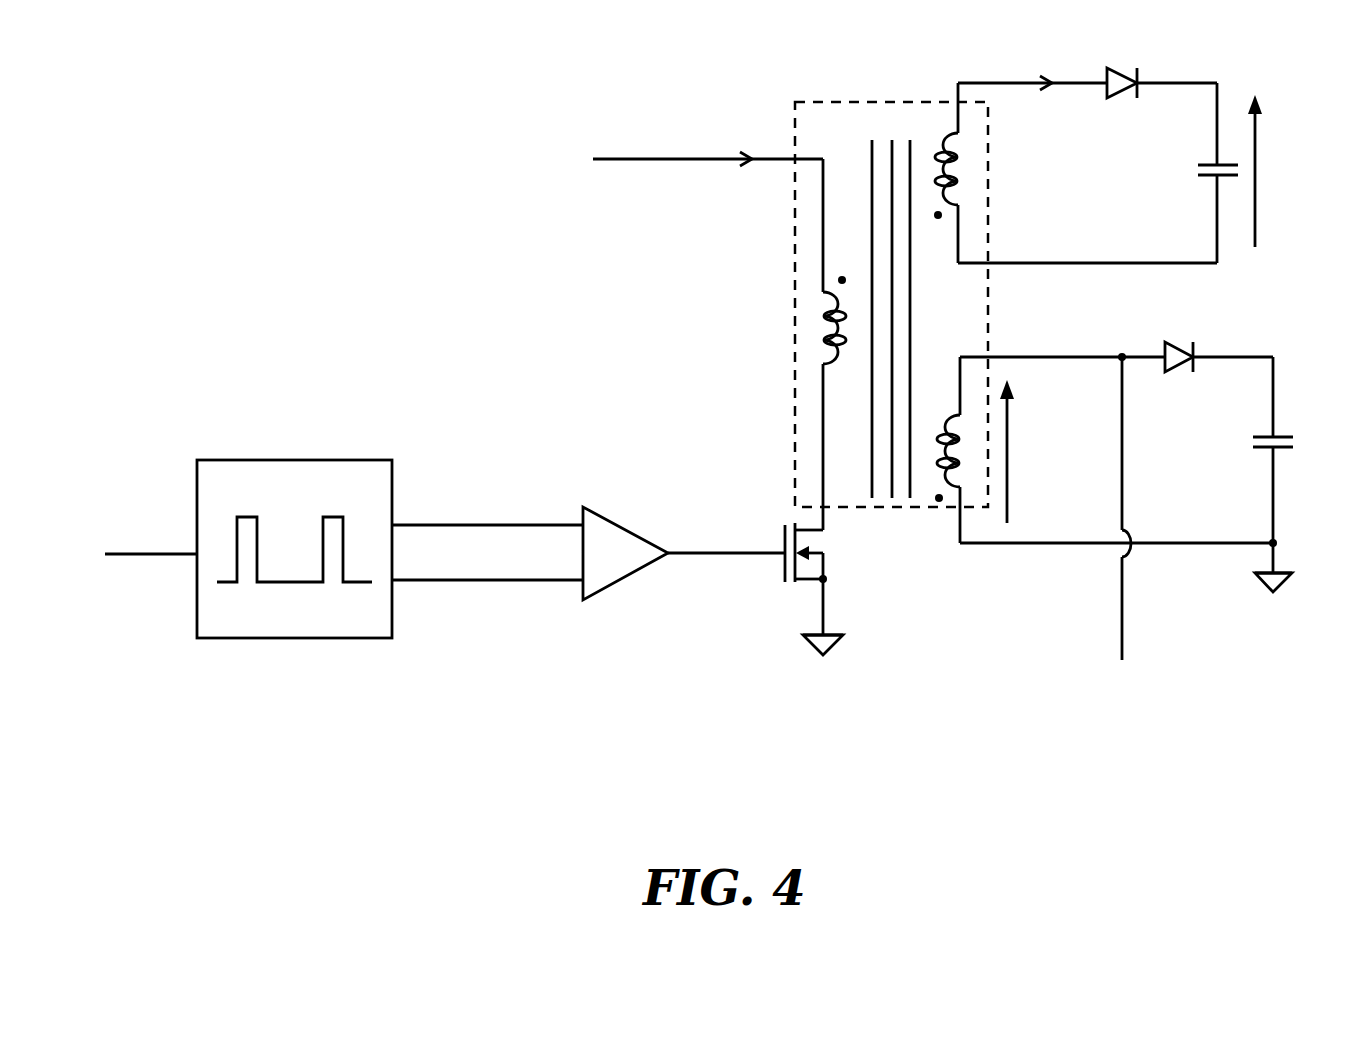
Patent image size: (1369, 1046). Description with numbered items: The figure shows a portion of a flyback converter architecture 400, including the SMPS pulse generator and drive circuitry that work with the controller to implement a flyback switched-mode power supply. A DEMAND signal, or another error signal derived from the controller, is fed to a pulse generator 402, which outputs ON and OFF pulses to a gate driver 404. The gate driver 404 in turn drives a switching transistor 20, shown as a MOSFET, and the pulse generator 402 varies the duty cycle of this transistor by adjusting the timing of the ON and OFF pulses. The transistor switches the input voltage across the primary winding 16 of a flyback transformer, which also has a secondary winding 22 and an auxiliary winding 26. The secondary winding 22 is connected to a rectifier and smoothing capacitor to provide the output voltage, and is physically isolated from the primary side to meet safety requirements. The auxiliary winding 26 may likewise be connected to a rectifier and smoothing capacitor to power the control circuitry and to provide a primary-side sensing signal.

The flyback converter architecture 400 is at (216, 779).
The pulse generator 402 is at (271, 460).
The gate driver 404 is at (618, 494).
The primary winding 16 is at (786, 326).
The switching transistor 20 is at (775, 599).
The secondary winding 22 is at (992, 163).
The auxiliary winding 26 is at (939, 525).